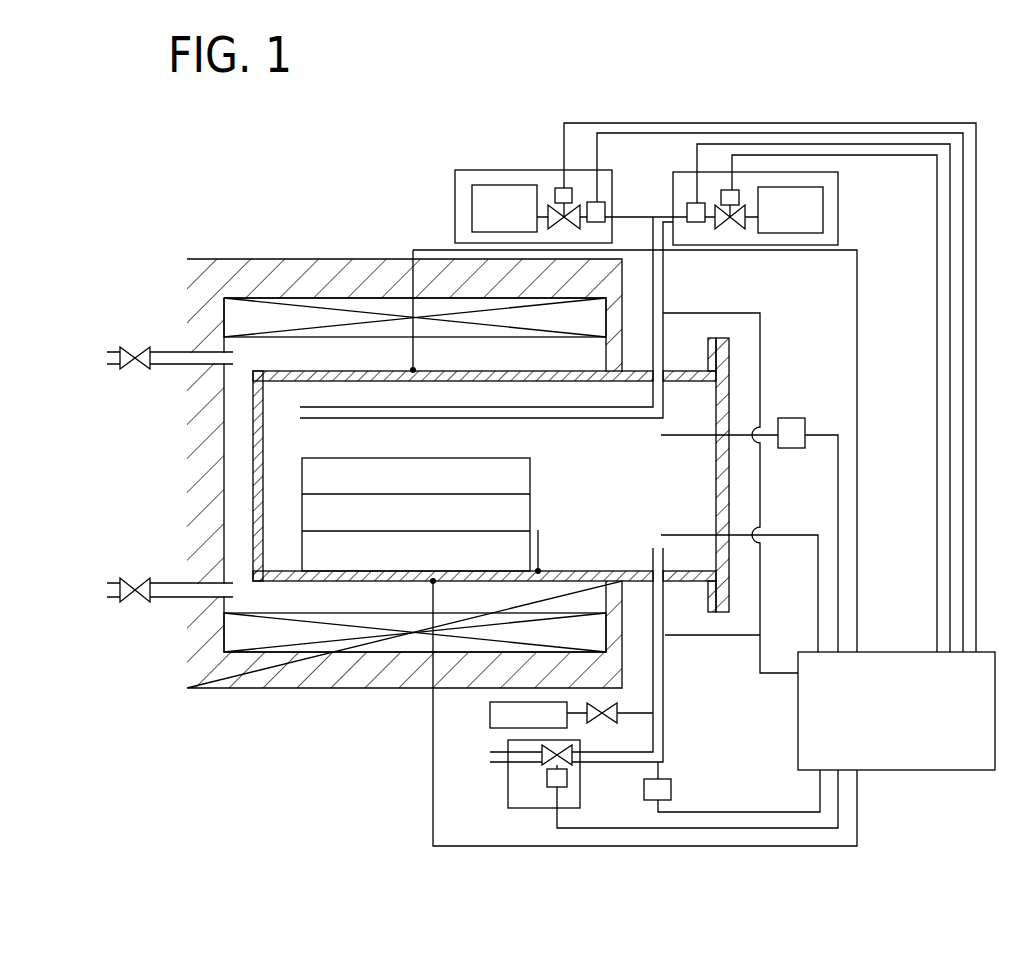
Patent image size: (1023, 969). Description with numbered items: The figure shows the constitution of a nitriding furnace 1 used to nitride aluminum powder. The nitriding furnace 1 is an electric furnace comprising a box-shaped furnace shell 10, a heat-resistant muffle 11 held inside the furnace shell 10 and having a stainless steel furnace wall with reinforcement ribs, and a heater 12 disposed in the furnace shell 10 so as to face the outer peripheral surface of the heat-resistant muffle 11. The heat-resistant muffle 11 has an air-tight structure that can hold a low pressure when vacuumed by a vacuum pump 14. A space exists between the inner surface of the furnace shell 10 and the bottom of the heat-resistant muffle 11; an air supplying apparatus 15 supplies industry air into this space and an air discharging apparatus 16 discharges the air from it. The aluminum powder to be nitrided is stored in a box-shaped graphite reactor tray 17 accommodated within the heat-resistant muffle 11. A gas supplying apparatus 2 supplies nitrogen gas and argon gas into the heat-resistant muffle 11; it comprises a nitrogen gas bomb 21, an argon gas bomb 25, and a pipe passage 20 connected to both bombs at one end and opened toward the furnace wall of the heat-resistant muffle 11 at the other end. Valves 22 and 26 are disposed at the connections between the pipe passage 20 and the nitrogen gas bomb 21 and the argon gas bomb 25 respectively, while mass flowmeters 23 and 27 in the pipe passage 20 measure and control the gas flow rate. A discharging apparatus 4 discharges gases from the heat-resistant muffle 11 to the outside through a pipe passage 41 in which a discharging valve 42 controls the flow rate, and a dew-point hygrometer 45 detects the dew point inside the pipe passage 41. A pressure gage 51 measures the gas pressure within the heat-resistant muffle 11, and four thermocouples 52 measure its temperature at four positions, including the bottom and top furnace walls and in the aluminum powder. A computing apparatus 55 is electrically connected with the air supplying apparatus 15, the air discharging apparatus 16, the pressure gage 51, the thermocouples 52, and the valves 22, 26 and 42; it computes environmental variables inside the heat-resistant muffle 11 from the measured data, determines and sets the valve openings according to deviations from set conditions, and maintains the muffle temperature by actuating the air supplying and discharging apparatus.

The nitriding furnace 1 is at (168, 240).
The furnace shell 10 is at (262, 258).
The heat-resistant muffle 11 is at (253, 478).
The heater 12 is at (240, 636).
The vacuum pump 14 is at (490, 715).
The air supplying apparatus 15 is at (148, 600).
The air discharging apparatus 16 is at (128, 370).
The reactor tray 17 is at (540, 483).
The pipe passage 20 is at (641, 214).
The gas supplying apparatus 2 is at (475, 170).
The nitrogen gas bomb 21 is at (514, 195).
The valve 22 is at (560, 186).
The mass flowmeter 23 is at (601, 200).
The argon gas bomb 25 is at (794, 200).
The valve 26 is at (737, 190).
The mass flowmeter 27 is at (697, 202).
The pipe passage 41 is at (658, 722).
The discharging apparatus 4 is at (520, 808).
The discharging valve 42 is at (560, 788).
The dew-point hygrometer 45 is at (657, 801).
The pressure gage 51 is at (792, 427).
The thermocouples 52 is at (430, 243).
The computing apparatus 55 is at (926, 762).